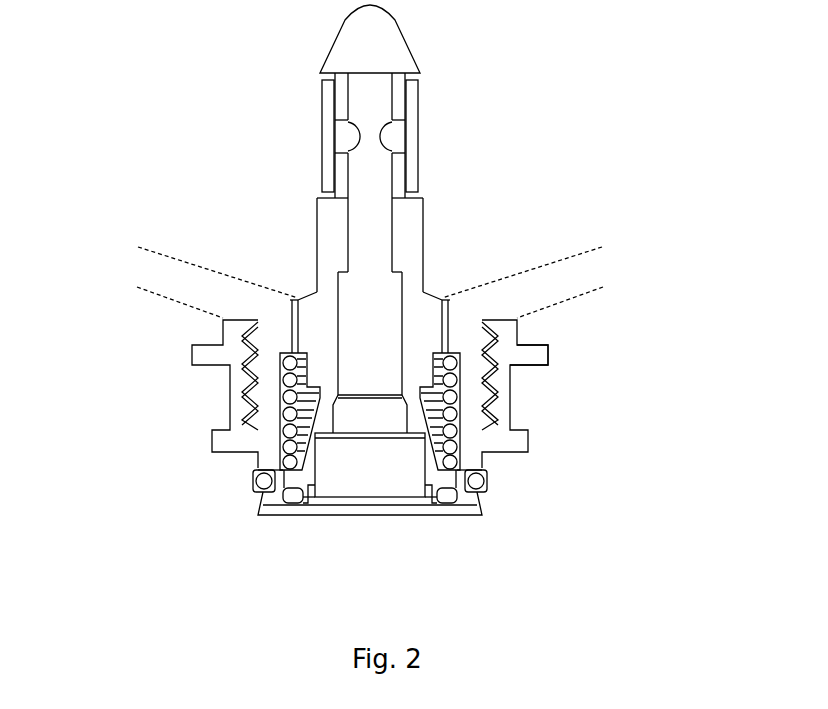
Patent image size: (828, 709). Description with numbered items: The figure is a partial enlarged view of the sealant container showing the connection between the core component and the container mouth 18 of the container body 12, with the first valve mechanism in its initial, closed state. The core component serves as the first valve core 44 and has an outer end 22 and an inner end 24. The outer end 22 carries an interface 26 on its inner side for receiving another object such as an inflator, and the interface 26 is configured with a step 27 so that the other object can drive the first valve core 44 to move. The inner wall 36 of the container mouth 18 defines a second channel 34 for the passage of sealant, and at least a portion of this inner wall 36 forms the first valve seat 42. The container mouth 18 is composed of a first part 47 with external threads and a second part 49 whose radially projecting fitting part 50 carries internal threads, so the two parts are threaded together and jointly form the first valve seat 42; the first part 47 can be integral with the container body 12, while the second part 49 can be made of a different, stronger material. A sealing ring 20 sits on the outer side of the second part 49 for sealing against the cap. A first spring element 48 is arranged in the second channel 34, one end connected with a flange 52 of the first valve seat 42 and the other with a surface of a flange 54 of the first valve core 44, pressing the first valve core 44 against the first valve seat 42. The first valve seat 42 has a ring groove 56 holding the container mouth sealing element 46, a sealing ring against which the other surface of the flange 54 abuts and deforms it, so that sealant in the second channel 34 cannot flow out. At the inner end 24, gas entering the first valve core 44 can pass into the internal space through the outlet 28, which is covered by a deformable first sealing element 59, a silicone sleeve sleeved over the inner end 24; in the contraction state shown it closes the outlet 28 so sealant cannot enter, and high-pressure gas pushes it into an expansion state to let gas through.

The container body 12 is at (618, 265).
The container mouth 18 is at (229, 384).
The sealing ring 20 is at (485, 487).
The outer end 22 is at (317, 515).
The inner end 24 is at (303, 88).
The interface 26 is at (410, 435).
The step 27 is at (418, 437).
The outlet 28 is at (407, 134).
The second channel 34 is at (283, 405).
The inner wall 36 is at (460, 400).
The first valve seat 42 is at (473, 443).
The first valve core 44 is at (317, 318).
The container mouth sealing element 46 is at (283, 495).
The first part 47 is at (478, 350).
The first spring element 48 is at (290, 413).
The second part 49 is at (503, 388).
The fitting part 50 is at (510, 370).
The flange 52 is at (290, 353).
The flange 54 is at (255, 464).
The ring groove 56 is at (285, 517).
The first sealing element 59 is at (418, 171).